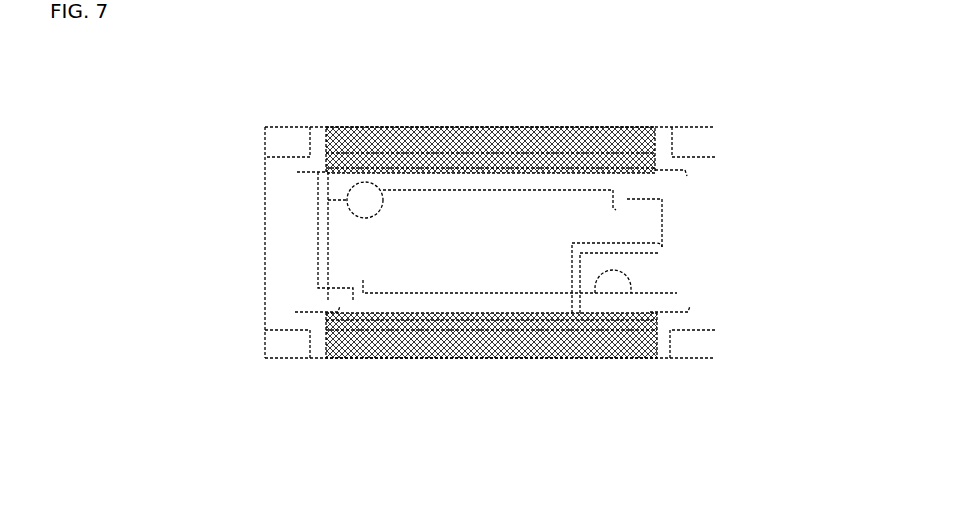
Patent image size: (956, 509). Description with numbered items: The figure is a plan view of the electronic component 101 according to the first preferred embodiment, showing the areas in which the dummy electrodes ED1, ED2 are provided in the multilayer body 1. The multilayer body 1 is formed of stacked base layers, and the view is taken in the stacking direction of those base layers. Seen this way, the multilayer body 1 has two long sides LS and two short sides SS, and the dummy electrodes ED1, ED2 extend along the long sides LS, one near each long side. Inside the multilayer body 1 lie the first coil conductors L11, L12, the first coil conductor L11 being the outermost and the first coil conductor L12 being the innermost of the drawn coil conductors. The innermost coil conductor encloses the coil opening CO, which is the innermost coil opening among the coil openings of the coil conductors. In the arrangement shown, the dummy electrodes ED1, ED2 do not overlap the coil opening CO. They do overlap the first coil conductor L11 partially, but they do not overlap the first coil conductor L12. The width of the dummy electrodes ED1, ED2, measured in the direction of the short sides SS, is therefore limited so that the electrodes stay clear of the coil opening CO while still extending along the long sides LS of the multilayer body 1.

The electronic component 101 is at (335, 59).
The multilayer body 1 is at (705, 173).
The dummy electrode ED1 is at (505, 128).
The dummy electrode ED2 is at (505, 352).
The coil opening CO is at (531, 222).
The first coil conductor L11 is at (683, 202).
The first coil conductor L12 is at (663, 246).
The long side LS is at (466, 112).
The short side SS is at (244, 238).